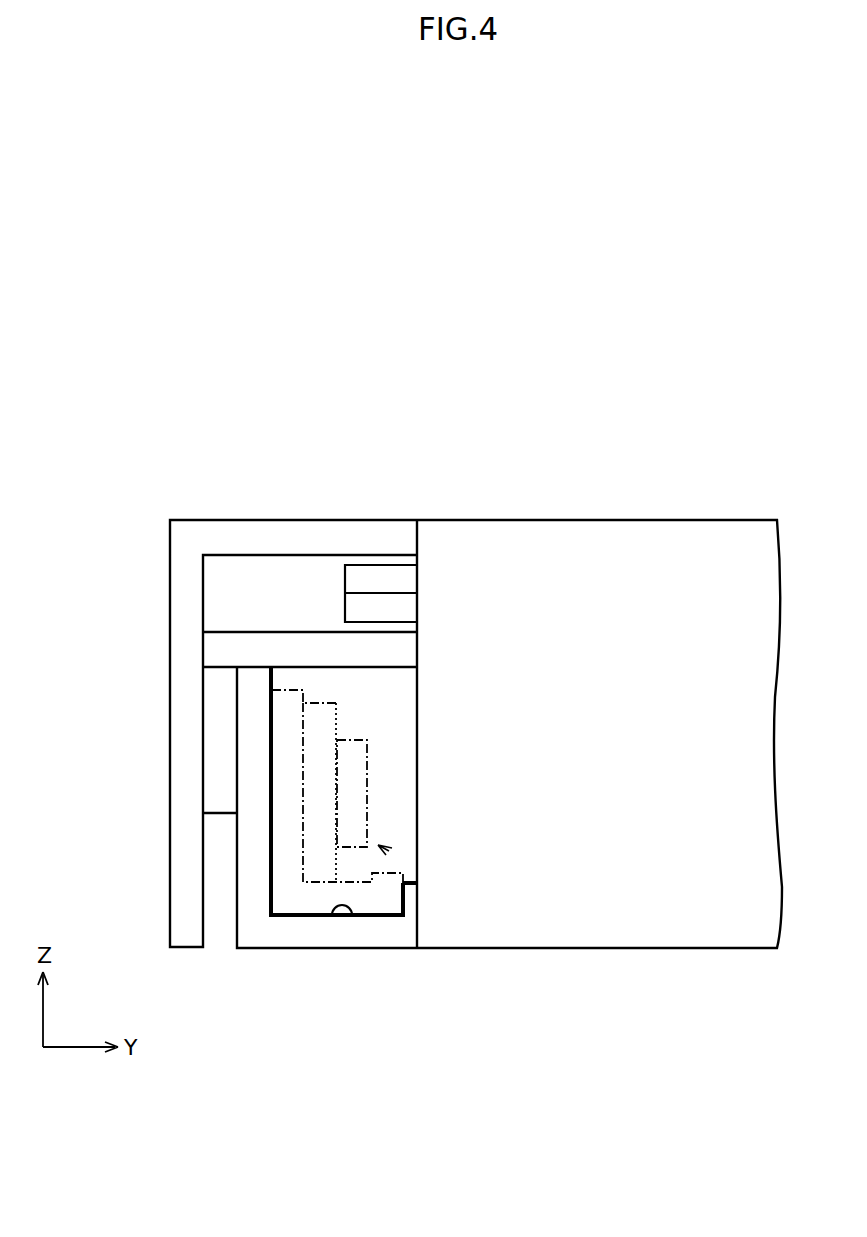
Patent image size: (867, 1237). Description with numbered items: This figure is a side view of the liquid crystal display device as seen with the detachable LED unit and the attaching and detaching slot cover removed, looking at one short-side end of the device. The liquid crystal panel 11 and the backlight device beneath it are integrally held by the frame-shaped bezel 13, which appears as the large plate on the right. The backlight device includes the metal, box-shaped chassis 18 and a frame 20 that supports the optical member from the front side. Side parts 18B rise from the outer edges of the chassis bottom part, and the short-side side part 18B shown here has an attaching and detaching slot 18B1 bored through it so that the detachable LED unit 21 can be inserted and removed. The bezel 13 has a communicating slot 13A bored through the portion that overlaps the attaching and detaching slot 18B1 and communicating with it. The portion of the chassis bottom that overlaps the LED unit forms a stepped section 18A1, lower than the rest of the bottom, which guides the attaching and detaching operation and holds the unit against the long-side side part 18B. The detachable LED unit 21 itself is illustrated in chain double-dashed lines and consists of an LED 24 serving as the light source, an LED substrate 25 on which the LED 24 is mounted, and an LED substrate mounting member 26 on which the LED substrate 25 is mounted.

The frame 20 is at (257, 632).
The liquid crystal panel 11 is at (370, 565).
The bezel 13 is at (555, 553).
The communicating slot 13A is at (417, 762).
The chassis 18 is at (267, 948).
The side part 18B is at (252, 882).
The attaching and detaching slot 18B1 is at (342, 905).
The stepped section 18A1 is at (410, 890).
The detachable LED unit 21 is at (382, 848).
The LED 24 is at (352, 740).
The LED substrate 25 is at (327, 703).
The LED substrate mounting member 26 is at (289, 690).